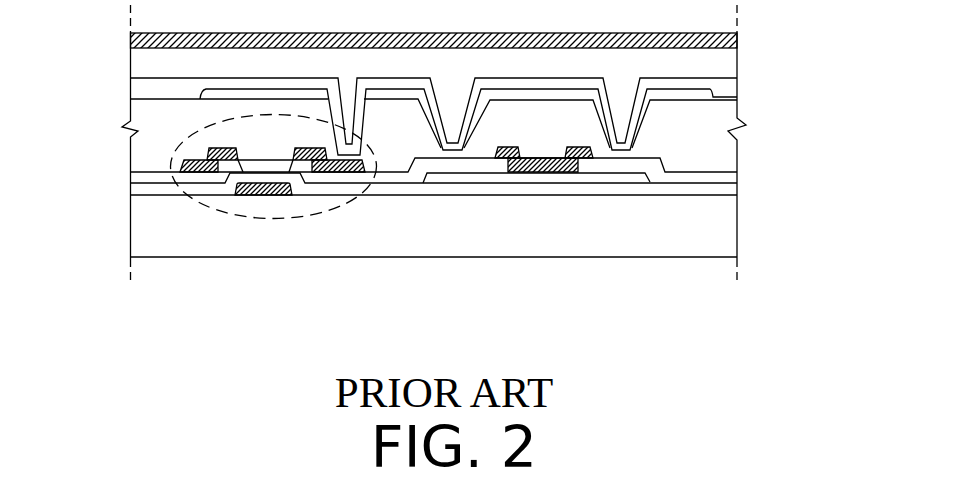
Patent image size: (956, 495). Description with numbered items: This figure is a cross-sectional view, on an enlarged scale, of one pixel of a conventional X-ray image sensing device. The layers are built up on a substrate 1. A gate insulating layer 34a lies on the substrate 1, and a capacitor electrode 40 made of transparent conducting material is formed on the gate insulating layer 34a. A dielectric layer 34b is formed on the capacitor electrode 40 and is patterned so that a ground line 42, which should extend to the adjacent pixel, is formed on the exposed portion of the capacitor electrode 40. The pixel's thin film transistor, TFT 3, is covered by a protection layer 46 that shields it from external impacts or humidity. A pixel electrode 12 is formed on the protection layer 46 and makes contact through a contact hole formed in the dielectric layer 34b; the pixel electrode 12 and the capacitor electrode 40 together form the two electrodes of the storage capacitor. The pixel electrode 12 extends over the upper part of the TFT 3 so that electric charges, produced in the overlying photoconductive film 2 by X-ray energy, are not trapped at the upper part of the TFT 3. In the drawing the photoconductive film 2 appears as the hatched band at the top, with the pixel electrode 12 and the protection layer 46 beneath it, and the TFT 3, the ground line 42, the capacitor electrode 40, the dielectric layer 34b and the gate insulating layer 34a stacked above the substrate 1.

The substrate 1 is at (423, 238).
The photoconductive film 2 is at (725, 63).
The TFT 3 is at (213, 207).
The pixel electrode 12 is at (707, 97).
The gate insulating layer 34a is at (725, 191).
The dielectric layer 34b is at (472, 163).
The capacitor electrode 40 is at (610, 178).
The ground line 42 is at (535, 172).
The protection layer 46 is at (718, 147).